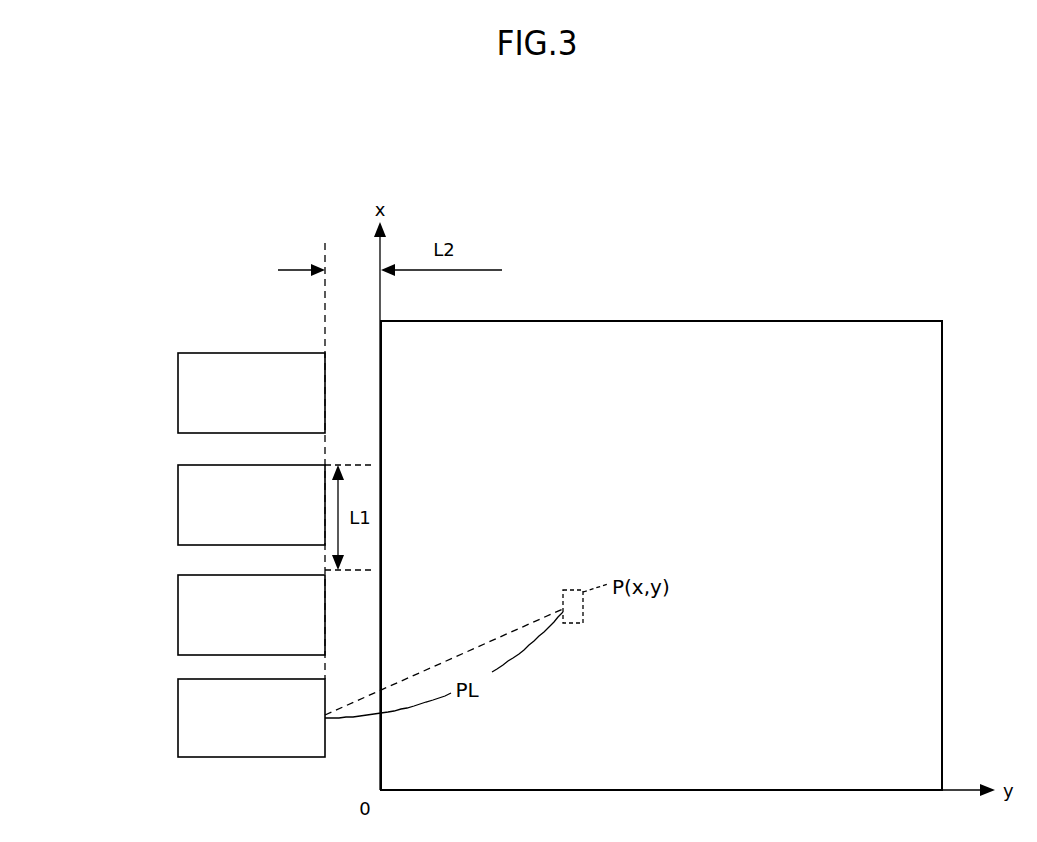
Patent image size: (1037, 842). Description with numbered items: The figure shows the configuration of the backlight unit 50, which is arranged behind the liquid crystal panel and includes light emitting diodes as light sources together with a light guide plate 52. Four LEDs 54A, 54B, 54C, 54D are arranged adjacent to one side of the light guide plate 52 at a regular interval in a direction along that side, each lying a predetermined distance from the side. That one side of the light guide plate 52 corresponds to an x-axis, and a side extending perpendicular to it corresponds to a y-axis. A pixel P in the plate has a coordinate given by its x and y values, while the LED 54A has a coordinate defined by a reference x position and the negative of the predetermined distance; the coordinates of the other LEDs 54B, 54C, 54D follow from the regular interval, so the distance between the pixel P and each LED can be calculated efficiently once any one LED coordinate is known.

The backlight unit 50 is at (661, 475).
The light guide plate 52 is at (688, 315).
The LED 54A is at (182, 718).
The LED 54B is at (173, 615).
The LED 54C is at (173, 505).
The LED 54D is at (172, 393).